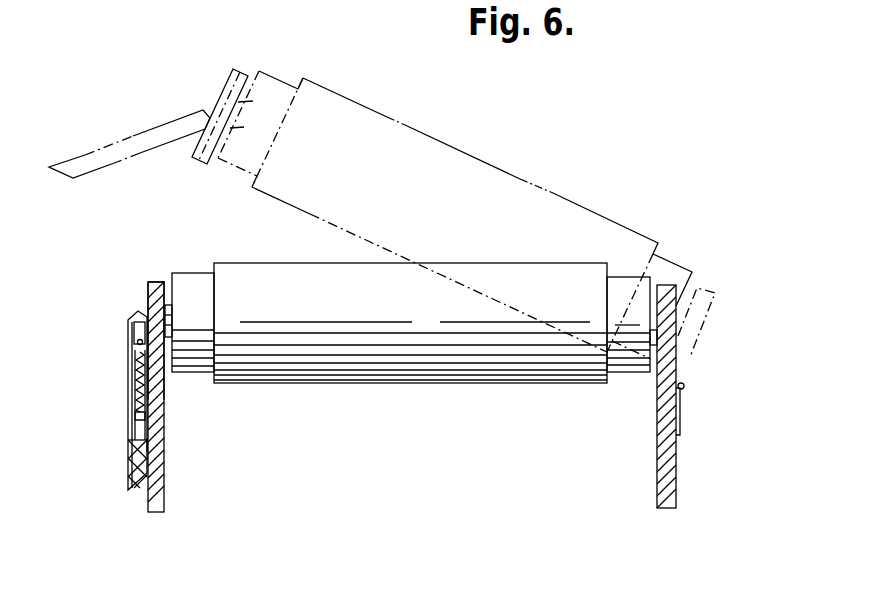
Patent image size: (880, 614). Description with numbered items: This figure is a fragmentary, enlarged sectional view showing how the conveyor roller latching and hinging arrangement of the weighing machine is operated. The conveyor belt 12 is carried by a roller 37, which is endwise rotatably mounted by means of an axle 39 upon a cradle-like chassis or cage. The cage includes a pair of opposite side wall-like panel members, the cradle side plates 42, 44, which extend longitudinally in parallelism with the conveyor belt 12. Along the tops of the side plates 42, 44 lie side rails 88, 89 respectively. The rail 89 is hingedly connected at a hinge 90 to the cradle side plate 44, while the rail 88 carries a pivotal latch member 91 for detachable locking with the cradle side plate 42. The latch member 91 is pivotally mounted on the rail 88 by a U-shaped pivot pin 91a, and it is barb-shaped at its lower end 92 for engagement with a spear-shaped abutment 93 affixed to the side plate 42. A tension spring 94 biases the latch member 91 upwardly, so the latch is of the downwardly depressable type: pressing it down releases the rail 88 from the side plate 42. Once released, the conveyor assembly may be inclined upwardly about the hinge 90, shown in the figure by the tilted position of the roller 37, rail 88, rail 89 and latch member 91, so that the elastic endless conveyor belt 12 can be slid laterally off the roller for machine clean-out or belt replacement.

The conveyor belt 12 is at (473, 156).
The roller 37 is at (283, 81).
The axle 39 is at (167, 305).
The cradle side plate 42 is at (158, 498).
The cradle side plate 44 is at (663, 482).
The side rail 88 is at (245, 67).
The side rail 89 is at (667, 287).
The hinge 90 is at (686, 385).
The latch member 91 is at (130, 133).
The U-shaped pivot pin 91a is at (95, 334).
The barb-shaped lower end 92 is at (128, 478).
The spear-shaped abutment 93 is at (147, 445).
The tension spring 94 is at (128, 378).